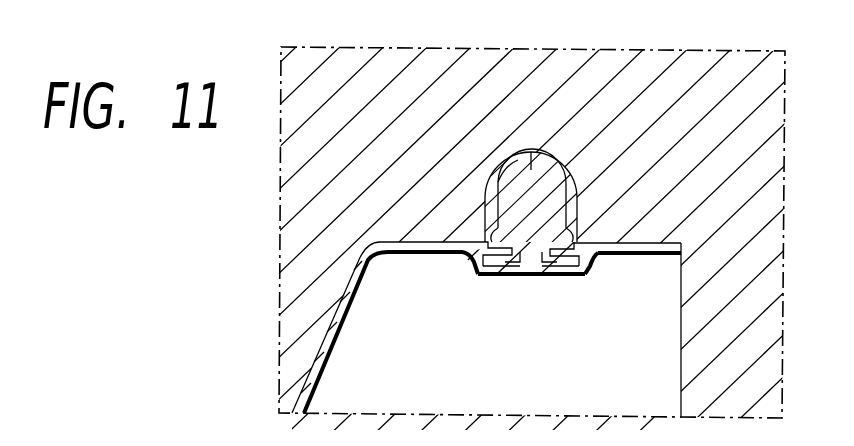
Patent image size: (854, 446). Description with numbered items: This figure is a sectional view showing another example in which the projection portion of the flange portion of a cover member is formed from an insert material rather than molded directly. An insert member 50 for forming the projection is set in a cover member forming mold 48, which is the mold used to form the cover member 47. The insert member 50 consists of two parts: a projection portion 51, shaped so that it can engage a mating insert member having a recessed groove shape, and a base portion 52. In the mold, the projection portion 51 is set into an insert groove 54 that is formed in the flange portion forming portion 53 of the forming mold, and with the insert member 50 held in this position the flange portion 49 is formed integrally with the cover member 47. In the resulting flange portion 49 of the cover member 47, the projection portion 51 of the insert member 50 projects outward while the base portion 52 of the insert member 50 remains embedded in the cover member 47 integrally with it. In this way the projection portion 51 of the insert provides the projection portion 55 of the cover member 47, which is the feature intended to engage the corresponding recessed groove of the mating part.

The cover member 47 is at (342, 335).
The cover member forming mold 48 is at (745, 117).
The flange portion 49 is at (643, 254).
The insert member 50 is at (556, 208).
The projection portion 51 is at (521, 184).
The base portion 52 is at (529, 262).
The flange portion forming portion 53 is at (428, 241).
The insert groove 54 is at (489, 183).
The projection portion of the cover member 55 is at (539, 196).